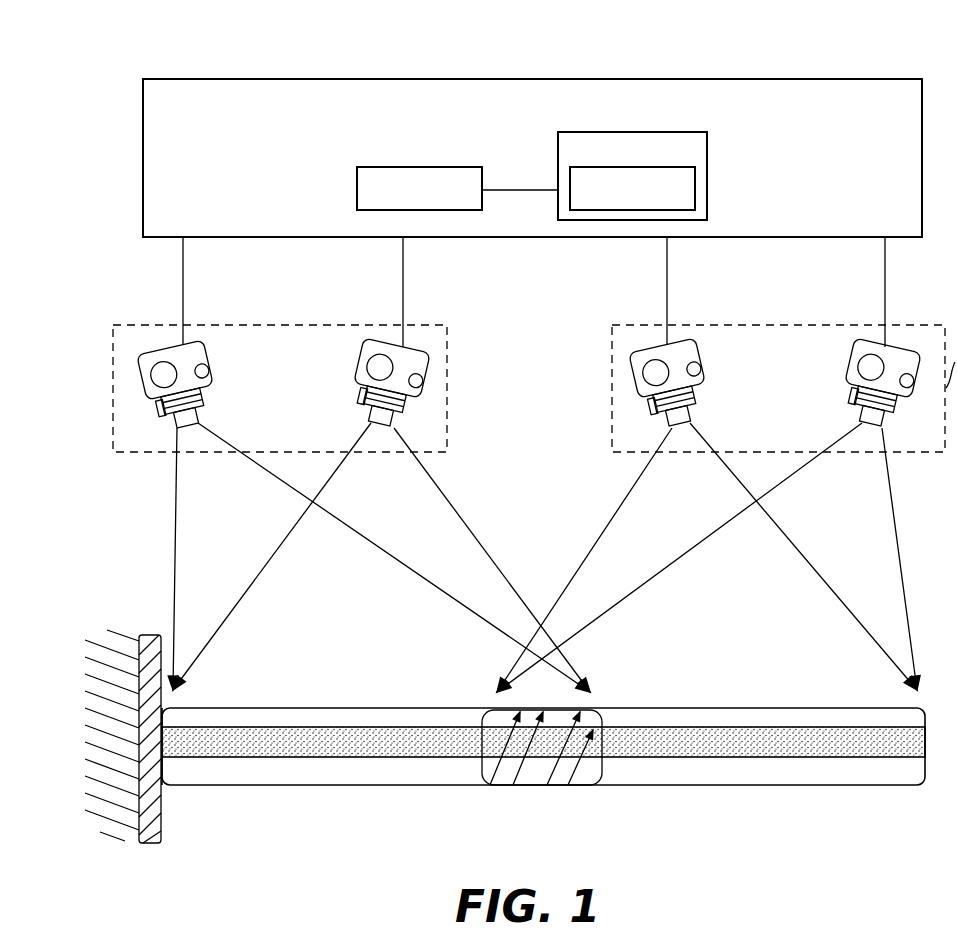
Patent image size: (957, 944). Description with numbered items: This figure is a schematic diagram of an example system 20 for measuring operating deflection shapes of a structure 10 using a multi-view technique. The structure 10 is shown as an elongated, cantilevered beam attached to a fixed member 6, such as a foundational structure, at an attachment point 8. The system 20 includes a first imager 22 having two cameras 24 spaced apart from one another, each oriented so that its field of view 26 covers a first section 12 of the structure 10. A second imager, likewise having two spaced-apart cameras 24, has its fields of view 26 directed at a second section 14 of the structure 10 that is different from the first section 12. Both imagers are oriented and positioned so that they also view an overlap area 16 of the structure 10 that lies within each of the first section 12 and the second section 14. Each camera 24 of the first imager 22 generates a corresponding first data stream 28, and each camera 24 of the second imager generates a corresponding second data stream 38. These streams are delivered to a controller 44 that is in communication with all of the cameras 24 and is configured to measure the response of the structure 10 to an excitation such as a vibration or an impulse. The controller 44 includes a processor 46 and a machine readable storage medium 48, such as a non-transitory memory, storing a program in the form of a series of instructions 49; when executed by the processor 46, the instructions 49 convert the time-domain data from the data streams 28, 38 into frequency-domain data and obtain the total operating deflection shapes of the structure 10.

The system 20 is at (128, 54).
The controller 44 is at (586, 79).
The processor 46 is at (364, 167).
The machine readable storage medium 48 is at (698, 132).
The instructions 49 is at (696, 189).
The first data stream 28 is at (183, 290).
The second data stream 38 is at (667, 290).
The first imager 22 is at (113, 392).
The cameras 24 is at (212, 360).
The fields of view 26 is at (175, 538).
The fixed member 6 is at (150, 635).
The attachment point 8 is at (158, 740).
The structure 10 is at (720, 740).
The first section 12 is at (296, 798).
The second section 14 is at (774, 797).
The overlap area 16 is at (545, 797).